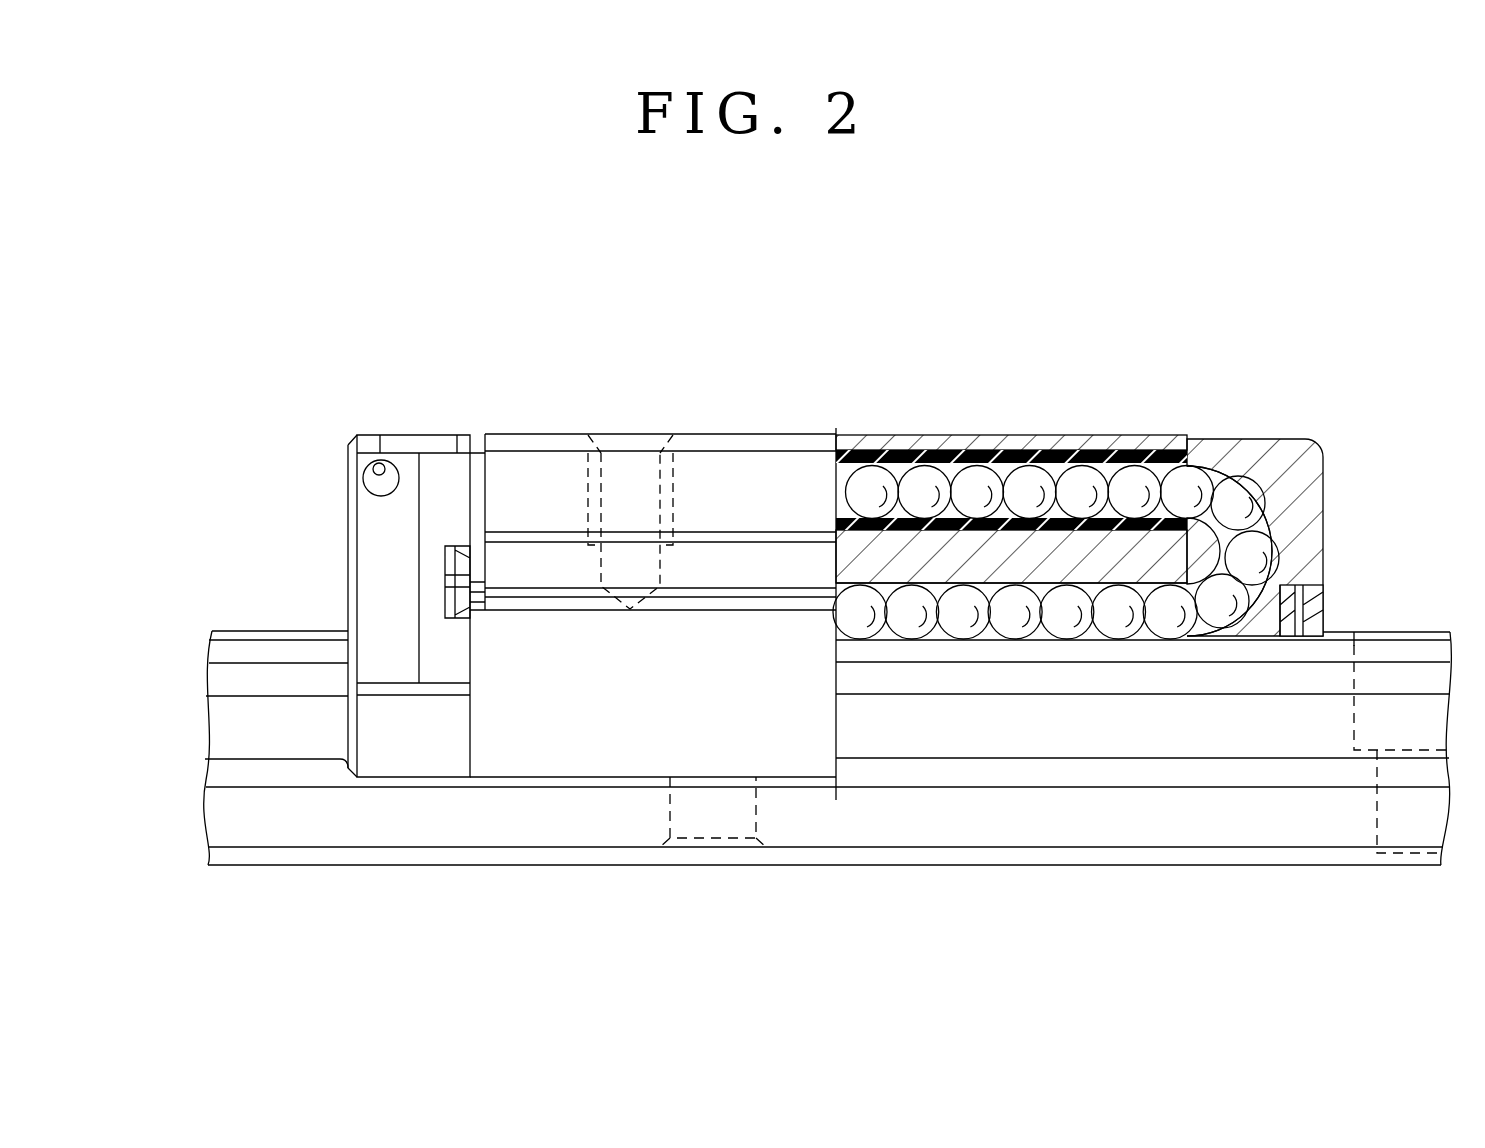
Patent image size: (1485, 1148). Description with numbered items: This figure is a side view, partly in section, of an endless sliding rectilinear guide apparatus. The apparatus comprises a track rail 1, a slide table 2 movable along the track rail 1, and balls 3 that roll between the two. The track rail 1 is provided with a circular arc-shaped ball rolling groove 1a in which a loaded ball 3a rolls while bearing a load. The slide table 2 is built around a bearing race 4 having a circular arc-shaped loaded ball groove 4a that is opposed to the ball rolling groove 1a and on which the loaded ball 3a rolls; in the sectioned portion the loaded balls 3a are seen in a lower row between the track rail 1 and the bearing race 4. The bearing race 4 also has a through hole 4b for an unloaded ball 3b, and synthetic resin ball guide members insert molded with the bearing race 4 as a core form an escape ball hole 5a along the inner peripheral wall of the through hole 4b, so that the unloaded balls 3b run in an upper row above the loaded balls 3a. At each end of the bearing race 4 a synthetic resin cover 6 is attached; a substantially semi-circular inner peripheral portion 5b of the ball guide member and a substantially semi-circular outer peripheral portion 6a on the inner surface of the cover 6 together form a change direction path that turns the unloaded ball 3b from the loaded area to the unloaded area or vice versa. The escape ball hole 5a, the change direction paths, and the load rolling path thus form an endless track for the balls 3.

The track rail 1 is at (214, 622).
The ball rolling groove 1a is at (280, 632).
The slide table 2 is at (418, 428).
The balls 3 is at (1056, 623).
The loaded ball 3a is at (1014, 640).
The unloaded ball 3b is at (982, 475).
The bearing race 4 is at (540, 433).
The loaded ball groove 4a is at (1143, 580).
The through hole 4b is at (872, 450).
The escape ball hole 5a is at (1087, 462).
The inner peripheral portion 5b is at (1233, 503).
The cover 6 is at (373, 517).
The outer peripheral portion 6a is at (1323, 470).